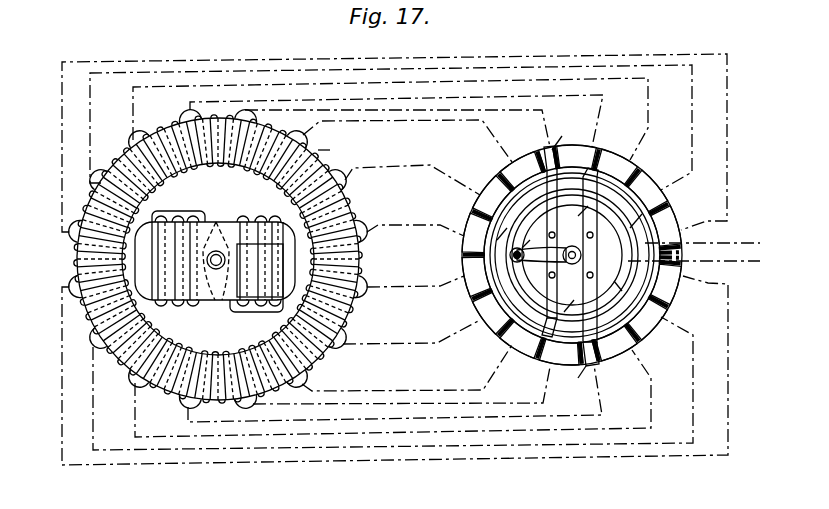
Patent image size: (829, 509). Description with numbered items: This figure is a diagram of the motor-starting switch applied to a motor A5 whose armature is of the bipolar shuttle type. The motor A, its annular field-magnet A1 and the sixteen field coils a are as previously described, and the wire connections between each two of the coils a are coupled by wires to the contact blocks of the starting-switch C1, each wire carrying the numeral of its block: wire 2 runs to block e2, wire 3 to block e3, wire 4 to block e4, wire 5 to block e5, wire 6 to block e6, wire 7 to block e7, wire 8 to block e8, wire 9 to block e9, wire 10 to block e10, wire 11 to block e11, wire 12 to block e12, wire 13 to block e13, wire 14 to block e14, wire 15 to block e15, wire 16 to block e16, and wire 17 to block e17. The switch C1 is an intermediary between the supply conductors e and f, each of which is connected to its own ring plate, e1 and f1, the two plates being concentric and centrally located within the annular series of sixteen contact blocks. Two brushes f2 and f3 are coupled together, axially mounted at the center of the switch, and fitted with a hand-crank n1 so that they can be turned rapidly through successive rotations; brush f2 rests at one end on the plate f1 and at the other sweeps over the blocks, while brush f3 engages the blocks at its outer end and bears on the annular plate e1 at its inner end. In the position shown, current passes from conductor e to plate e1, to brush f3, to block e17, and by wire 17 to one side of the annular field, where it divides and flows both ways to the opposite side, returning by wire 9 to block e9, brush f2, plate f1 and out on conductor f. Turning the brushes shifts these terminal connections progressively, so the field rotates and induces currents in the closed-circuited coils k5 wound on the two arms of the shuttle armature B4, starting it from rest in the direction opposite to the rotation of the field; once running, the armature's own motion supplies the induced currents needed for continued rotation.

The wire 2 is at (406, 141).
The wire 3 is at (412, 180).
The wire 4 is at (415, 235).
The wire 5 is at (415, 284).
The wire 6 is at (411, 327).
The wire 7 is at (407, 367).
The wire 8 is at (401, 384).
The wire 9 is at (395, 394).
The wire 10 is at (393, 393).
The wire 11 is at (393, 383).
The wire 12 is at (395, 370).
The wire 13 is at (394, 143).
The wire 14 is at (391, 127).
The wire 15 is at (390, 119).
The wire 16 is at (395, 121).
The wire 17 is at (397, 128).
The motor A is at (218, 259).
The field-magnet A1 is at (332, 150).
The motor A5 is at (204, 259).
The field coils a is at (218, 259).
The armature B4 is at (215, 261).
The closed-circuited coils k5 is at (217, 261).
The starting-switch C1 is at (572, 255).
The supply conductor e is at (694, 251).
The ring-plate e1 is at (572, 255).
The contact-block e2 is at (522, 170).
The contact-block e3 is at (492, 198).
The contact-block e4 is at (475, 235).
The contact-block e5 is at (475, 275).
The contact-block e6 is at (492, 312).
The contact-block e7 is at (522, 339).
The contact-block e8 is at (560, 353).
The contact-block e9 is at (582, 365).
The contact-block e10 is at (615, 343).
The contact-block e11 is at (647, 319).
The contact-block e12 is at (666, 282).
The contact-block e13 is at (667, 227).
The contact-block e14 is at (648, 192).
The contact-block e15 is at (615, 167).
The contact-block e16 is at (576, 156).
The contact-block e17 is at (557, 147).
The supply conductor f is at (702, 235).
The ring-plate f1 is at (571, 231).
The brush f2 is at (565, 241).
The brush f3 is at (579, 267).
The hand-crank n1 is at (545, 249).